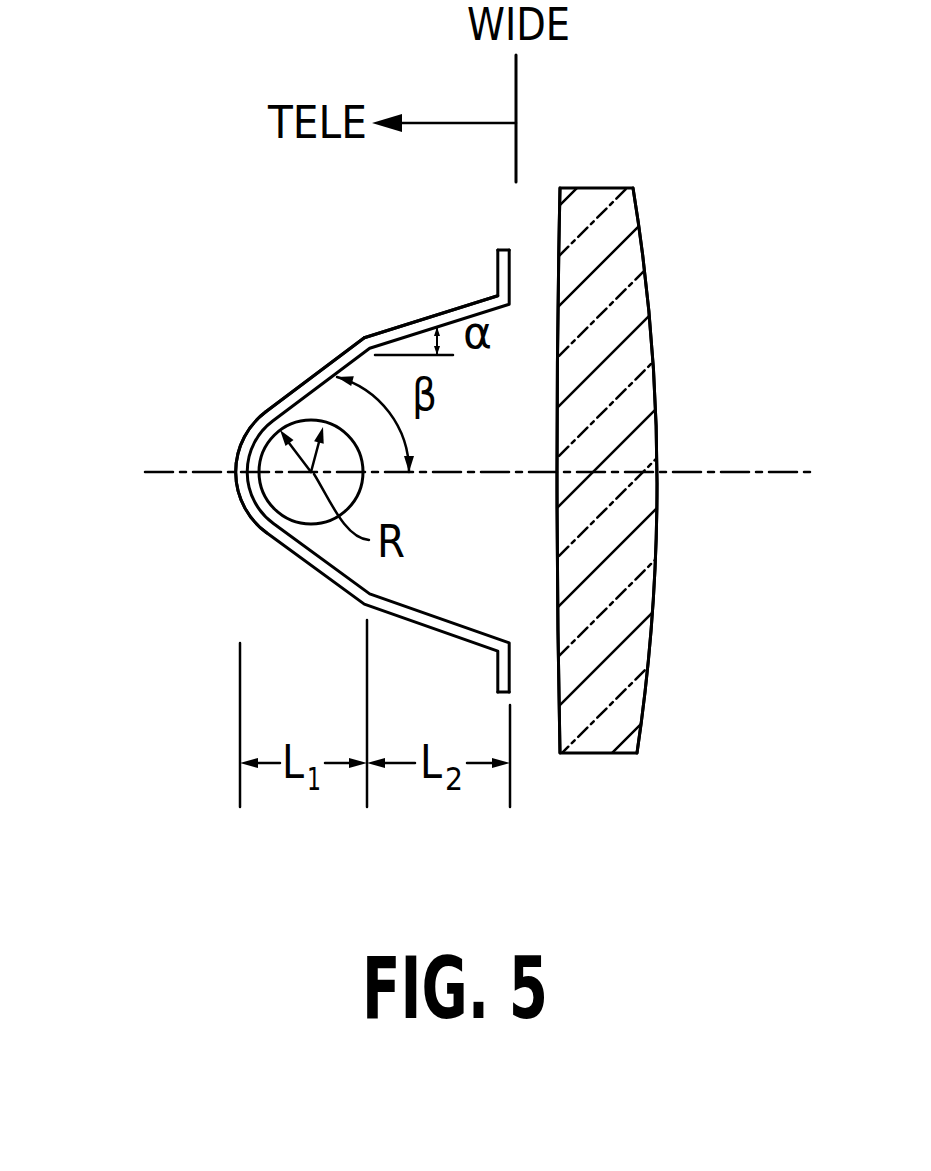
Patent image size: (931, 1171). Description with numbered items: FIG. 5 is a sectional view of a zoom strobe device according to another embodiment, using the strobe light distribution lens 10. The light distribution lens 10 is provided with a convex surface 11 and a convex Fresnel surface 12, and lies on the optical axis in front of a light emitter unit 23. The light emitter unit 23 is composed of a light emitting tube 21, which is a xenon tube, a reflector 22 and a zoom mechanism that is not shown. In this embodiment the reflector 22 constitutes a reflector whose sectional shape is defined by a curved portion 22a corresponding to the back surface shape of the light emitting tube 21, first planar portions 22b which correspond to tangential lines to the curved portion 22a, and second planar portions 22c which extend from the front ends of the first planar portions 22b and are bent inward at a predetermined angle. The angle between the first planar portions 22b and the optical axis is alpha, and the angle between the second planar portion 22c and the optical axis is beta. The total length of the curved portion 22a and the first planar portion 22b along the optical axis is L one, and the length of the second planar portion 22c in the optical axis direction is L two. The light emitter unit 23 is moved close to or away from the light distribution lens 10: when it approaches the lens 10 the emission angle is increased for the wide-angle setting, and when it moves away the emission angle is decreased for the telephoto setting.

The light distribution lens 10 is at (673, 281).
The convex surface 11 is at (658, 448).
The convex Fresnel surface 12 is at (560, 370).
The light emitting tube 21 is at (280, 486).
The reflector 22 is at (312, 555).
The curved portion 22a is at (245, 448).
The first planar portions 22b is at (302, 397).
The second planar portions 22c is at (412, 327).
The light emitter unit 23 is at (79, 503).